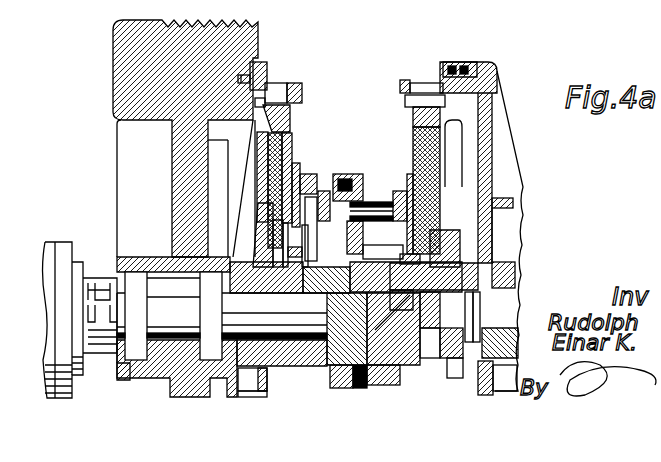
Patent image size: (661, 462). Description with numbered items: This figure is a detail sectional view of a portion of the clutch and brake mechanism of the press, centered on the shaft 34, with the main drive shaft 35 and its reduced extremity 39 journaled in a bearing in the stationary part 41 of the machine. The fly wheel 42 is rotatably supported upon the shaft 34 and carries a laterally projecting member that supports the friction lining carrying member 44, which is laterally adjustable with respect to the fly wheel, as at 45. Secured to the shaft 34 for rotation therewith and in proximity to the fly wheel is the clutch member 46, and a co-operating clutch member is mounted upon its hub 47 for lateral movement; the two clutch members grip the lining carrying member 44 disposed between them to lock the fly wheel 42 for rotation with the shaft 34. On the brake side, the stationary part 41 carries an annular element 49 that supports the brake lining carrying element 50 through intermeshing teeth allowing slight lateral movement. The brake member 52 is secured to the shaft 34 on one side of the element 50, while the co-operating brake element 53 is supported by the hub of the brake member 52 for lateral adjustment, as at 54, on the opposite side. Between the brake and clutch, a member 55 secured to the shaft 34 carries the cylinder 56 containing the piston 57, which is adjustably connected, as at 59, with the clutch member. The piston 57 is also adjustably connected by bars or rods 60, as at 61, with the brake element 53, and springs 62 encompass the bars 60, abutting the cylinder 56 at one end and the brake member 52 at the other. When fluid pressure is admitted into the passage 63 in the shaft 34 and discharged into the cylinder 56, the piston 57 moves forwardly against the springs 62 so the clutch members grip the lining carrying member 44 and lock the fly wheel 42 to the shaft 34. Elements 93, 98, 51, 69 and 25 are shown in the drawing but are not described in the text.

The fly wheel 42 is at (133, 77).
The clutch member 46 is at (197, 179).
The lateral adjustment 45 is at (270, 80).
The bolt head 93 is at (295, 83).
The friction lining carrying member 44 is at (288, 115).
The threaded stud 98 is at (293, 137).
The adjustable connection 59 is at (320, 180).
The piston 57 is at (335, 187).
The cylinder 56 is at (358, 172).
The bars or rods 60 is at (378, 197).
The adjustable connection 61 is at (397, 195).
The springs 62 is at (375, 240).
The stationary part 41 is at (495, 78).
The annular element 49 is at (410, 82).
The plate 51 is at (412, 106).
The brake lining carrying element 50 is at (443, 115).
The brake element 53 is at (413, 143).
The lateral adjustment 54 is at (442, 245).
The brake member 52 is at (410, 263).
The reduced extremity 39 is at (170, 300).
The hub 47 is at (273, 287).
The bearing 69 is at (325, 312).
The member 55 is at (377, 366).
The shaft 34 is at (418, 368).
The passage 63 is at (325, 370).
The shaft 35 is at (60, 0).
The frame 25 is at (600, 7).